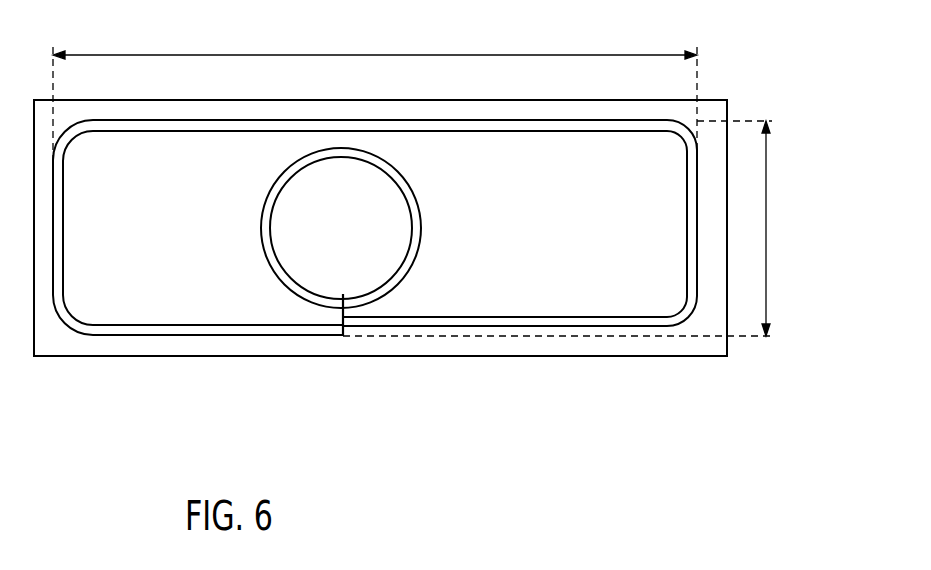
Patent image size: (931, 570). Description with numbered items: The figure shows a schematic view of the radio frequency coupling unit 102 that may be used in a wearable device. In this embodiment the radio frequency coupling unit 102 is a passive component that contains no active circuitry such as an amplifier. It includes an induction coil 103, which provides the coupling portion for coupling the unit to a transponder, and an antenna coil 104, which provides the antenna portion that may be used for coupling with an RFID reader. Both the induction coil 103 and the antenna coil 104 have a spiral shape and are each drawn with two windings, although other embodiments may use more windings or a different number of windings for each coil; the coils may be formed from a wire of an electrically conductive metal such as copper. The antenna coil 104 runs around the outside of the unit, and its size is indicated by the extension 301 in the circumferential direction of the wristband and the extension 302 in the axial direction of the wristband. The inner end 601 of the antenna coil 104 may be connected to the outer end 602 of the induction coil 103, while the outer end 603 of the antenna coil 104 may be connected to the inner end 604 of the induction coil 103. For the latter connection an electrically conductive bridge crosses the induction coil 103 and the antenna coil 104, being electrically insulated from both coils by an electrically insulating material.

The radio frequency coupling unit 102 is at (632, 356).
The induction coil 103 is at (420, 198).
The antenna coil 104 is at (578, 315).
The extension of the antenna portion in the circumferential direction 301 is at (373, 54).
The extension of the antenna portion in the axial direction 302 is at (767, 230).
The inner end of the antenna coil 601 is at (358, 318).
The outer end of the induction coil 602 is at (349, 328).
The outer end of the antenna coil 603 is at (332, 336).
The inner end of the induction coil 604 is at (345, 294).